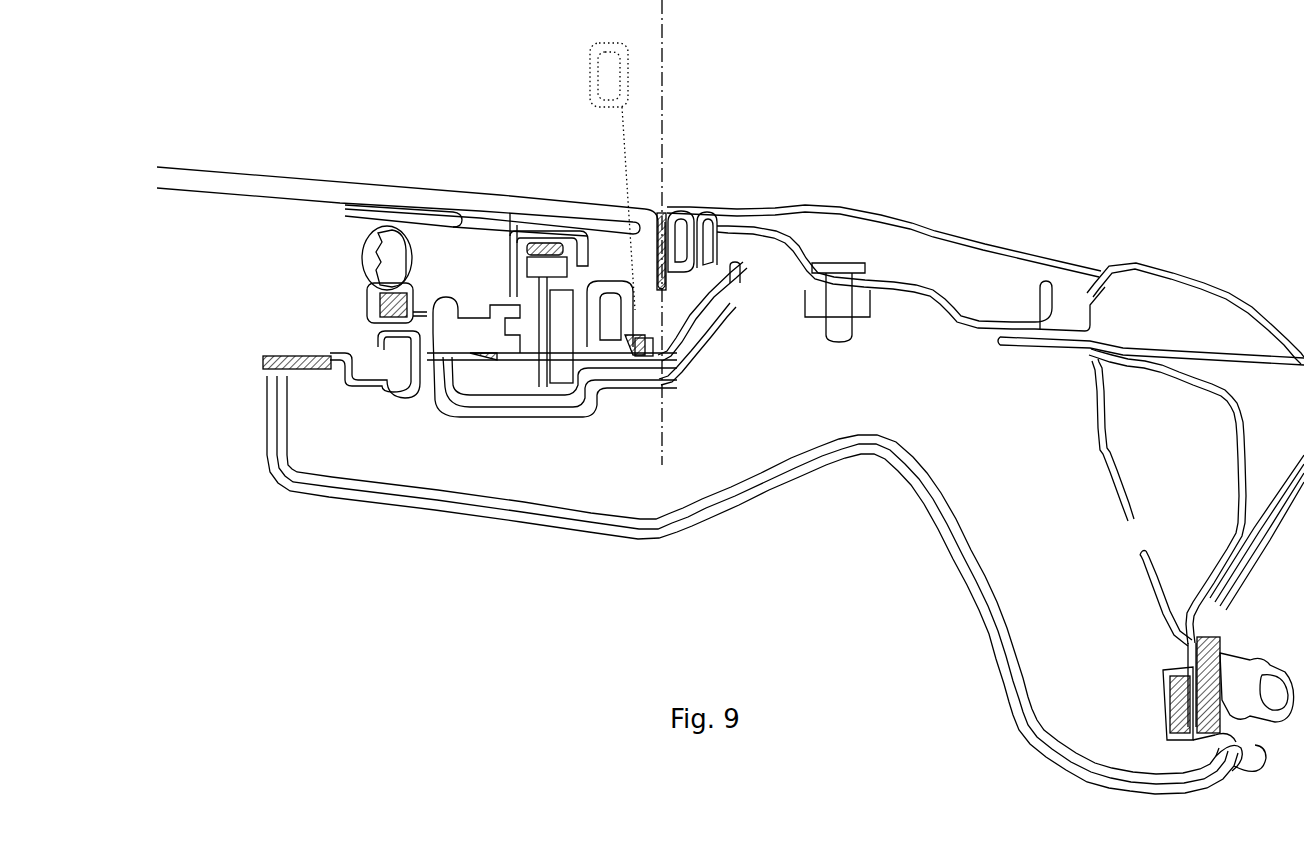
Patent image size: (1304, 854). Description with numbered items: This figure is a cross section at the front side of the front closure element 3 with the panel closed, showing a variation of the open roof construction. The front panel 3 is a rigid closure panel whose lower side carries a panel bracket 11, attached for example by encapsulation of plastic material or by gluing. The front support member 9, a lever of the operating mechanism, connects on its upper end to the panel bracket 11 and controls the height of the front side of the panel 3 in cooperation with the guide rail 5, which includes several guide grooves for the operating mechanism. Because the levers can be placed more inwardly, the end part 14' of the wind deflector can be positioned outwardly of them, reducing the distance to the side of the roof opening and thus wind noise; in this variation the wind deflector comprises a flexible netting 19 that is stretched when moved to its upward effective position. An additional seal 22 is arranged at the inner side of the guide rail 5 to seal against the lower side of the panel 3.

The front closure element 3 is at (388, 192).
The guide rail 5 is at (677, 343).
The front support member 9 is at (540, 234).
The panel bracket 11 is at (510, 235).
The end part of wind deflector 14' is at (594, 192).
The flexible netting 19 is at (620, 153).
The additional seal 22 is at (360, 240).